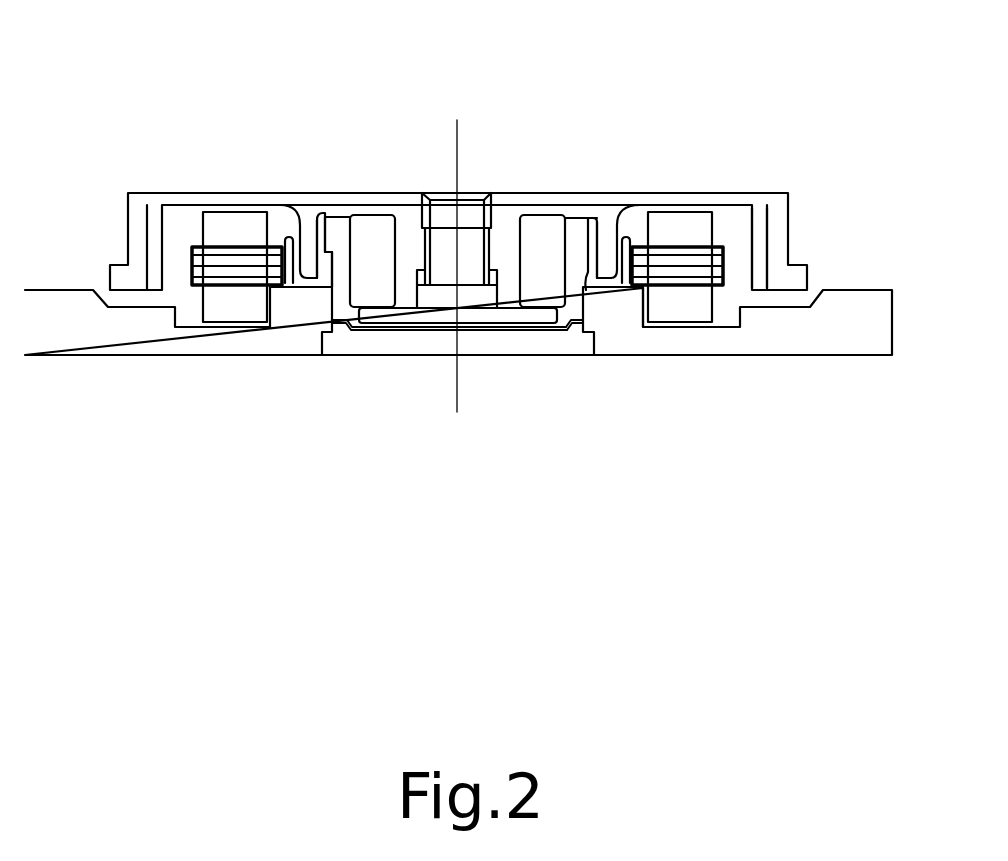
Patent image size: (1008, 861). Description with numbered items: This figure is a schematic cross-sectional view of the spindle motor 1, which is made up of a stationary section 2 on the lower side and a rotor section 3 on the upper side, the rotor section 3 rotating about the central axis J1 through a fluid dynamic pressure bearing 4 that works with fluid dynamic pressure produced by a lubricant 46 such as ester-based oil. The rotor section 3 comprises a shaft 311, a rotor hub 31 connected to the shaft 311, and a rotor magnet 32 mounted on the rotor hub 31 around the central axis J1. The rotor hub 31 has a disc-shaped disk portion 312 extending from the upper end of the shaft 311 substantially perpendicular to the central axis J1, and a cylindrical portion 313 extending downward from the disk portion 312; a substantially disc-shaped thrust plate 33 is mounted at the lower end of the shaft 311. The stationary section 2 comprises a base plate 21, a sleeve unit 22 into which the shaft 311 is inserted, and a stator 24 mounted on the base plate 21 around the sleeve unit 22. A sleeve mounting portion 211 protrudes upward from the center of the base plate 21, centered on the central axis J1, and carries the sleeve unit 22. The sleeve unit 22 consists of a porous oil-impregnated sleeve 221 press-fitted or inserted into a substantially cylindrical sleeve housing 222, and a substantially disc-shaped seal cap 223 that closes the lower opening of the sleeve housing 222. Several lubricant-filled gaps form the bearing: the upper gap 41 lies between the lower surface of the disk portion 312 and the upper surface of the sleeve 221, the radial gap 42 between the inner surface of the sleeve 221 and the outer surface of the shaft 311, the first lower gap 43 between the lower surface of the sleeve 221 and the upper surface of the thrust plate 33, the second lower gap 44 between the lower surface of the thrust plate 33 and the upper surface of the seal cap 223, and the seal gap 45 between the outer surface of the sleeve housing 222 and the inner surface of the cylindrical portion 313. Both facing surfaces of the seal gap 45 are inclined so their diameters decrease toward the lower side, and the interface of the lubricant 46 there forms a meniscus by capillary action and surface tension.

The motor 1 is at (94, 48).
The stationary section 2 is at (153, 448).
The rotor section 3 is at (212, 52).
The fluid dynamic pressure bearing 4 is at (500, 482).
The base plate 21 is at (95, 335).
The sleeve unit 22 is at (413, 392).
The stator 24 is at (714, 310).
The rotor hub 31 is at (588, 72).
The rotor magnet 32 is at (757, 245).
The thrust plate 33 is at (447, 313).
The upper gap 41 is at (372, 204).
The radial gap 42 is at (410, 247).
The first lower gap 43 is at (365, 305).
The second lower gap 44 is at (387, 337).
The seal gap 45 is at (592, 268).
The lubricant 46 is at (371, 290).
The sleeve mounting portion 211 is at (292, 330).
The porous oil-impregnated sleeve 221 is at (538, 283).
The sleeve housing 222 is at (575, 298).
The seal cap 223 is at (512, 330).
The shaft 311 is at (505, 228).
The disk portion 312 is at (564, 215).
The cylindrical portion 313 is at (610, 258).
The central axis J1 is at (457, 140).